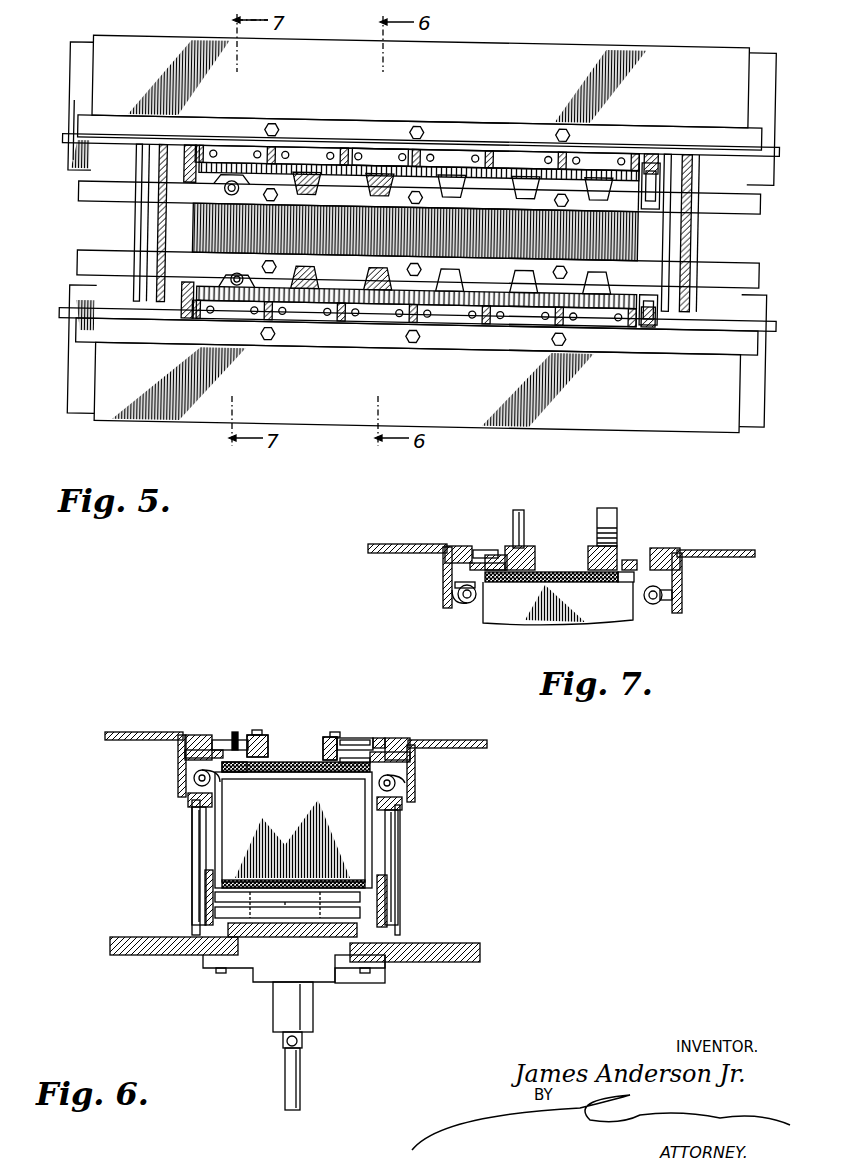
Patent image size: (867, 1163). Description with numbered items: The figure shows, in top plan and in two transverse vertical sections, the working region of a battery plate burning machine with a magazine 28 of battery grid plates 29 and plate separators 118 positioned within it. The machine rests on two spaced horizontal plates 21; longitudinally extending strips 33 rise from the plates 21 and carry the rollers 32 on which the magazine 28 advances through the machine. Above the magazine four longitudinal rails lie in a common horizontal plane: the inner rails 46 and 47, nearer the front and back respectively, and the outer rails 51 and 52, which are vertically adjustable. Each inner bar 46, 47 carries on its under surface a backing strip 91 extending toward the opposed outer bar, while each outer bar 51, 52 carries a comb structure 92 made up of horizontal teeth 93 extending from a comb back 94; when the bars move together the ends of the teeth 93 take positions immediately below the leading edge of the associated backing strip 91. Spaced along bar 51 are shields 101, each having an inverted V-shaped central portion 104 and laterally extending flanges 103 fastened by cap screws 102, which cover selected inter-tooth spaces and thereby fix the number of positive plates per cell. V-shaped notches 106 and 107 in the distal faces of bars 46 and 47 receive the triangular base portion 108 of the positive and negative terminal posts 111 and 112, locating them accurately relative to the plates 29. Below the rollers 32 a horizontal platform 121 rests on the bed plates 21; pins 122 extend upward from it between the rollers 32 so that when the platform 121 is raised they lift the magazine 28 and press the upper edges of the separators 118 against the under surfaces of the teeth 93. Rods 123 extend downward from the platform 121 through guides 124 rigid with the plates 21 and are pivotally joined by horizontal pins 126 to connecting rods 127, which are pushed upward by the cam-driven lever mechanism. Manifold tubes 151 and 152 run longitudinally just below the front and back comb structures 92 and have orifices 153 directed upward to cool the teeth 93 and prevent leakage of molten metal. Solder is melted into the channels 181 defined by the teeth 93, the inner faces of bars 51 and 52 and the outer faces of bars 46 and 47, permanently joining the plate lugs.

In FIG. 5, the horizontal plate 21 is at (80, 375).
In FIG. 6, the horizontal plate 21 is at (462, 946).
In FIG. 5, the magazine 28 is at (656, 245).
In FIG. 6, the magazine 28 is at (400, 848).
In FIG. 5, the battery grid plate 29 is at (632, 232).
In FIG. 7, the battery grid plate 29 is at (640, 616).
In FIG. 6, the battery grid plate 29 is at (232, 845).
In FIG. 5, the roller 32 is at (150, 233).
In FIG. 6, the roller 32 is at (388, 904).
In FIG. 5, the longitudinally extending strip 33 is at (63, 143).
In FIG. 6, the longitudinally extending strip 33 is at (395, 880).
In FIG. 5, the rail 46 is at (87, 264).
In FIG. 7, the rail 46 is at (535, 552).
In FIG. 6, the rail 46 is at (266, 738).
In FIG. 5, the rail 47 is at (86, 192).
In FIG. 7, the rail 47 is at (600, 546).
In FIG. 6, the rail 47 is at (333, 736).
In FIG. 5, the rail 51 is at (470, 320).
In FIG. 7, the rail 51 is at (460, 546).
In FIG. 6, the rail 51 is at (200, 735).
In FIG. 5, the rail 52 is at (388, 150).
In FIG. 7, the rail 52 is at (665, 552).
In FIG. 6, the rail 52 is at (400, 740).
In FIG. 7, the backing strip 91 is at (622, 565).
In FIG. 6, the backing strip 91 is at (272, 768).
In FIG. 6, the comb structure 92 is at (380, 762).
In FIG. 7, the tooth 93 is at (625, 584).
In FIG. 6, the tooth 93 is at (352, 762).
In FIG. 7, the comb back 94 is at (682, 580).
In FIG. 6, the comb back 94 is at (412, 752).
In FIG. 5, the shield 101 is at (207, 142).
In FIG. 6, the shield 101 is at (228, 736).
In FIG. 5, the cap screw 102 is at (478, 152).
In FIG. 6, the cap screw 102 is at (383, 740).
In FIG. 5, the laterally extending flange 103 is at (435, 151).
In FIG. 5, the central portion 104 is at (501, 150).
In FIG. 6, the central portion 104 is at (362, 740).
In FIG. 5, the V-shaped notch 106 is at (618, 294).
In FIG. 5, the V-shaped notch 107 is at (643, 180).
In FIG. 7, the triangular base portion 108 is at (500, 555).
In FIG. 5, the positive terminal post 111 is at (242, 283).
In FIG. 7, the positive terminal post 111 is at (525, 530).
In FIG. 5, the negative terminal post 112 is at (236, 182).
In FIG. 7, the negative terminal post 112 is at (618, 536).
In FIG. 7, the plate separator 118 is at (530, 582).
In FIG. 6, the plate separator 118 is at (300, 762).
In FIG. 5, the platform 121 is at (178, 211).
In FIG. 6, the platform 121 is at (342, 940).
In FIG. 6, the pin 122 is at (330, 880).
In FIG. 6, the rod 123 is at (270, 945).
In FIG. 6, the guide 124 is at (290, 1010).
In FIG. 6, the horizontal pin 126 is at (290, 1046).
In FIG. 6, the connecting rod 127 is at (300, 1087).
In FIG. 7, the manifold tube 151 is at (458, 595).
In FIG. 6, the manifold tube 151 is at (195, 777).
In FIG. 7, the manifold tube 152 is at (675, 596).
In FIG. 6, the manifold tube 152 is at (400, 772).
In FIG. 7, the orifice 153 is at (460, 588).
In FIG. 6, the orifice 153 is at (192, 797).
In FIG. 6, the channel 181 is at (238, 735).